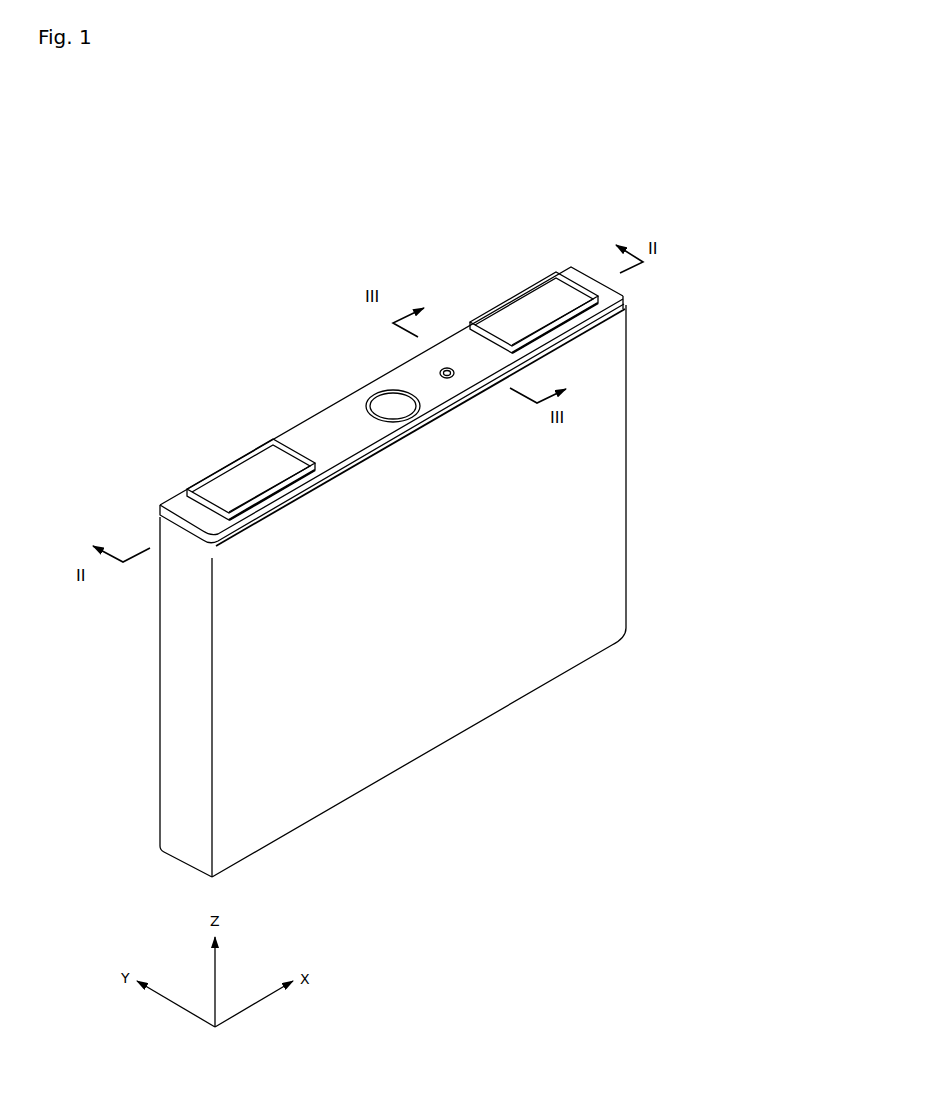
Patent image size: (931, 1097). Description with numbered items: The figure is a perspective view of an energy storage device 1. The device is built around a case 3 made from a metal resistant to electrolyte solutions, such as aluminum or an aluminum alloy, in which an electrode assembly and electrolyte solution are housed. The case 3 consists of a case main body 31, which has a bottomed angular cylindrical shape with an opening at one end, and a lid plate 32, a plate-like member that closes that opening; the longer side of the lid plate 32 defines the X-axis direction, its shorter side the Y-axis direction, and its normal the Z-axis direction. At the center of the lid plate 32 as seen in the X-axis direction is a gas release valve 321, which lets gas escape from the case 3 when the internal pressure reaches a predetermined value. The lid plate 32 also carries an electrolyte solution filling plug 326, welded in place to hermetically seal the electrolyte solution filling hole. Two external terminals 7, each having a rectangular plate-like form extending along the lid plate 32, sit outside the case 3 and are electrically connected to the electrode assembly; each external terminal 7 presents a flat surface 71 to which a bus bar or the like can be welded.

The energy storage device 1 is at (623, 185).
The case 3 is at (736, 358).
The case main body 31 is at (604, 456).
The lid plate 32 is at (617, 292).
The gas release valve 321 is at (373, 391).
The electrolyte solution filling plug 326 is at (441, 366).
The external terminal 7 is at (237, 477).
The surface 71 is at (263, 464).